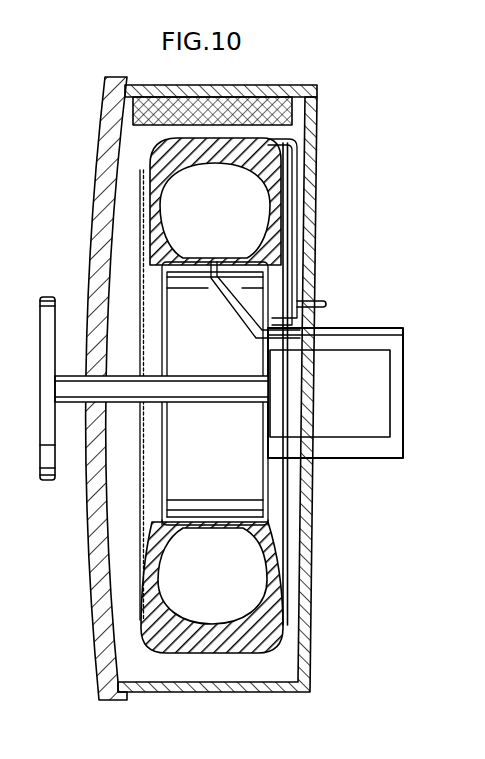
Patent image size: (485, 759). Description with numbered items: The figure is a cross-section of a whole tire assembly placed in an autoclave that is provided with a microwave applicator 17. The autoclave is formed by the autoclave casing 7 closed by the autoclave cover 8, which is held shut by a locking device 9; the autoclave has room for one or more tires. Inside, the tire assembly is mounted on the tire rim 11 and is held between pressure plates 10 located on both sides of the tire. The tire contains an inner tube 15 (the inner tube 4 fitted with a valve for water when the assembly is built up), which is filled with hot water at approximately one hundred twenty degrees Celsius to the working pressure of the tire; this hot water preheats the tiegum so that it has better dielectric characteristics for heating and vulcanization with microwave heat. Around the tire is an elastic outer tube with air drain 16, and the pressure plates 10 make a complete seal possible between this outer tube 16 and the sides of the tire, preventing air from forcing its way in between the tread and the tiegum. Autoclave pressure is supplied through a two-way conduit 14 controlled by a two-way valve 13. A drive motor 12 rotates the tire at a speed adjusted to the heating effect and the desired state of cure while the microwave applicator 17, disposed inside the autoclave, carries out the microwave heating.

The inner tube 4 is at (285, 552).
The autoclave casing 7 is at (317, 104).
The autoclave cover 8 is at (100, 180).
The locking device 9 is at (40, 330).
The pressure plates 10 is at (140, 526).
The tire rim 11 is at (265, 508).
The drive motor 12 is at (392, 363).
The two-way valve 13 is at (240, 305).
The two-way conduit for autoclave pressure 14 is at (322, 300).
The inner tube 15 is at (288, 213).
The outer tube with air drain 16 is at (297, 158).
The microwave applicator 17 is at (317, 127).